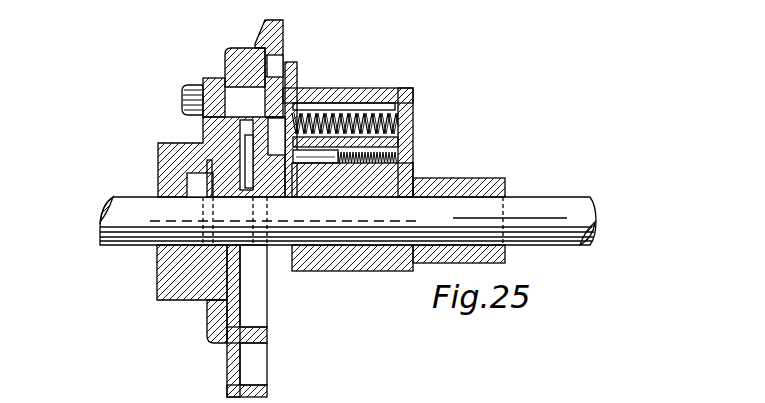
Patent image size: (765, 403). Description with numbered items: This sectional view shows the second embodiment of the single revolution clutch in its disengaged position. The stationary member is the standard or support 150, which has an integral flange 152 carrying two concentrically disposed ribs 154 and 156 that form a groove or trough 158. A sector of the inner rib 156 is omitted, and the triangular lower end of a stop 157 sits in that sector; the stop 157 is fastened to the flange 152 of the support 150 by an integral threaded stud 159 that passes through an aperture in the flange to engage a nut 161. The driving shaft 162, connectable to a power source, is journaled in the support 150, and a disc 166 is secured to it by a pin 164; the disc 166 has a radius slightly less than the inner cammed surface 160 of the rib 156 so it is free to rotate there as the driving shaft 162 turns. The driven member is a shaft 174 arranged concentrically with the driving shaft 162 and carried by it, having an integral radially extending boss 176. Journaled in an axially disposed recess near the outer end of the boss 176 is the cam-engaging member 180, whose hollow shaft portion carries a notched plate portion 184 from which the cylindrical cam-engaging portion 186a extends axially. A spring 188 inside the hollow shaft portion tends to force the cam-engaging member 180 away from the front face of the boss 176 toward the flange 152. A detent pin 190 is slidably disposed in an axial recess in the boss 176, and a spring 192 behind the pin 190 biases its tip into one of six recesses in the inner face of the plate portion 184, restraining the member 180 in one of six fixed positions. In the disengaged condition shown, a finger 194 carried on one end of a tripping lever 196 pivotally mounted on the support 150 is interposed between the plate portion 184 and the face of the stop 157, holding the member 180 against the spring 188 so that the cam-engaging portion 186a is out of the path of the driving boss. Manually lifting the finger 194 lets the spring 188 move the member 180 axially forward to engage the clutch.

The support 150 is at (168, 290).
The flange 152 is at (227, 373).
The outer rib 154 is at (270, 390).
The inner rib 156 is at (268, 333).
The stop 157 is at (227, 57).
The groove 158 is at (257, 363).
The threaded stud 159 is at (182, 97).
The inner cammed surface 160 is at (255, 327).
The nut 161 is at (205, 78).
The driving shaft 162 is at (112, 232).
The pin 164 is at (208, 183).
The disc 166 is at (227, 310).
The driven shaft 174 is at (480, 195).
The boss 176 is at (392, 90).
The cam-engaging member 180 is at (311, 73).
The plate portion 184 is at (293, 82).
The cam-engaging portion 186a is at (280, 179).
The spring 188 is at (402, 123).
The detent pin 190 is at (330, 158).
The spring 192 is at (402, 157).
The finger 194 is at (286, 62).
The tripping lever 196 is at (283, 25).